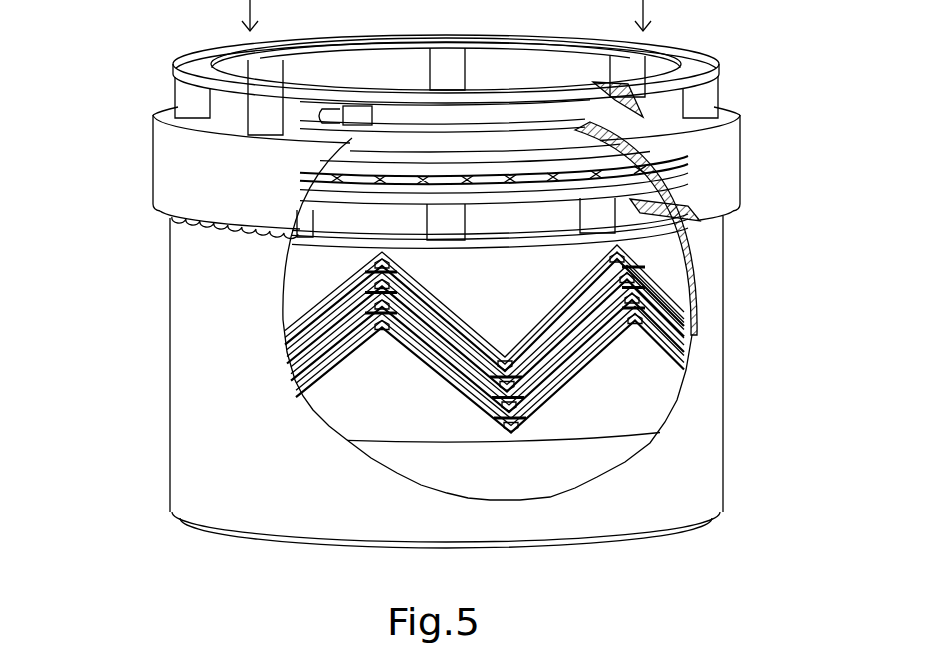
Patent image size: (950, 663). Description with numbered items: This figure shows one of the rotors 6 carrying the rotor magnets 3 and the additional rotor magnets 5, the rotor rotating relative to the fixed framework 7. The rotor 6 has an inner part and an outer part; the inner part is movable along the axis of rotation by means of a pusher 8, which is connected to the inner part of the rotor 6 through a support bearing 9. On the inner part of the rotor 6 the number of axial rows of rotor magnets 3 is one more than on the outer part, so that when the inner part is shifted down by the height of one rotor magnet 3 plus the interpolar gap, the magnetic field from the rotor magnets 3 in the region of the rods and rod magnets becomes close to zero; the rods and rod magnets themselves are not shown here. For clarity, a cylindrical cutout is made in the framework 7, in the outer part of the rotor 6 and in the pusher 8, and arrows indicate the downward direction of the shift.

The rotor magnets 3 is at (657, 280).
The additional rotor magnets 5 is at (663, 300).
The rotor 6 is at (205, 382).
The framework 7 is at (391, 162).
The pusher 8 is at (708, 85).
The support bearing 9 is at (556, 180).